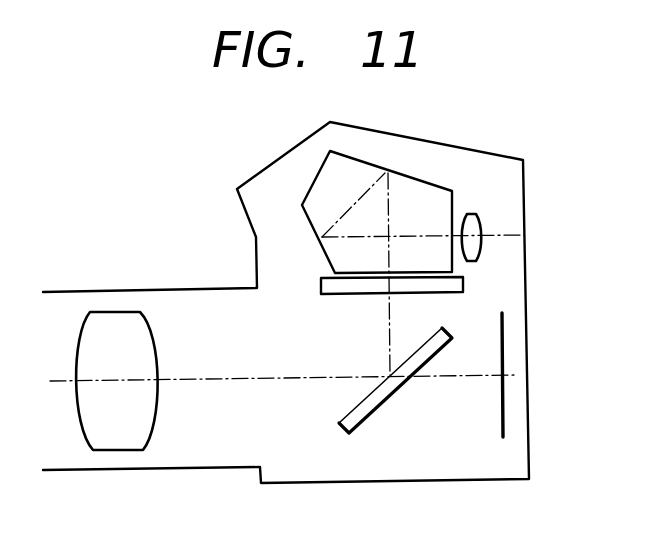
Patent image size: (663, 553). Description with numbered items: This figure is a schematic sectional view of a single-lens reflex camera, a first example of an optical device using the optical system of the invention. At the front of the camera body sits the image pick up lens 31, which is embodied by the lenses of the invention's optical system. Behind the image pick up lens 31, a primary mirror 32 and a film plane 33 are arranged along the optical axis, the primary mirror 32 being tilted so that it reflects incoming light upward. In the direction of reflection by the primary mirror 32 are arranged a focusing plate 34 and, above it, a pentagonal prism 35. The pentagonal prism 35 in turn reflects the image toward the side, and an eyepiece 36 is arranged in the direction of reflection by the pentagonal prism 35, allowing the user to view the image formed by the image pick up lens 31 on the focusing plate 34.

The image pick up lens 31 is at (122, 439).
The primary mirror 32 is at (370, 405).
The film plane 33 is at (502, 340).
The focusing plate 34 is at (463, 283).
The pentagonal prism 35 is at (323, 183).
The eyepiece 36 is at (475, 241).